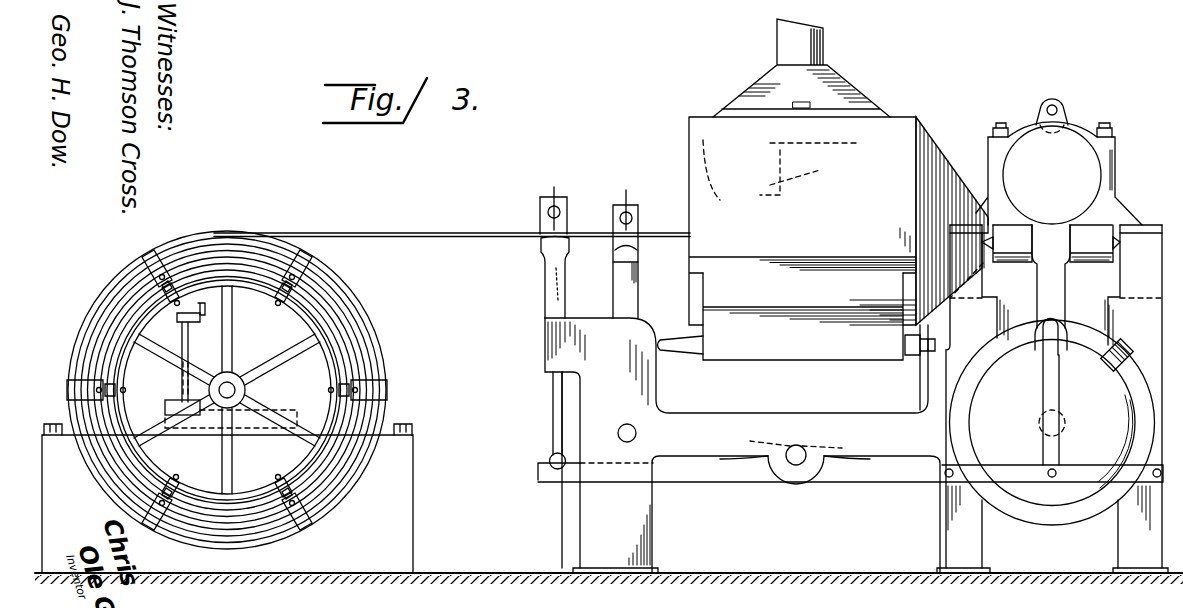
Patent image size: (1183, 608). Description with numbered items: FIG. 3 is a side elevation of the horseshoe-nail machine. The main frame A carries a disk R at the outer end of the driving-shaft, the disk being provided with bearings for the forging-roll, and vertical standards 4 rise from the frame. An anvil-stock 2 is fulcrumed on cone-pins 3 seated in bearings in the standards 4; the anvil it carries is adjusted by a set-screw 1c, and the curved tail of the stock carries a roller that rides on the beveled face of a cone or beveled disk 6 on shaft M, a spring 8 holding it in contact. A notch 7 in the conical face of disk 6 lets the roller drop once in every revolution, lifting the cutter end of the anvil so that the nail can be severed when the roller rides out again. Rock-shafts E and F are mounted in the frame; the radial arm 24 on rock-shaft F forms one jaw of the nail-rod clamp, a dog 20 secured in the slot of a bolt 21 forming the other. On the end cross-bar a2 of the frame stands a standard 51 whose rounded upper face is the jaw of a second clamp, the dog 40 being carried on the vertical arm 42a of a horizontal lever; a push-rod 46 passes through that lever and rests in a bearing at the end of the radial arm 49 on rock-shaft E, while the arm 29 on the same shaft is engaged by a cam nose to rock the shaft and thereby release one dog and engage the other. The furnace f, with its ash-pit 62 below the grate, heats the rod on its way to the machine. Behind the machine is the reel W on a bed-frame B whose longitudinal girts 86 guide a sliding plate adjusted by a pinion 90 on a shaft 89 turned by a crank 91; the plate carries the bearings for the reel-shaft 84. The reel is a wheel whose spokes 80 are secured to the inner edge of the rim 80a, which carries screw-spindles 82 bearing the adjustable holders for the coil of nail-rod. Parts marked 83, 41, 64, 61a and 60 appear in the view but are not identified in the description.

The retaining block 83 is at (327, 528).
The screw-spindles 82 is at (292, 294).
The rim or tire 80a is at (142, 348).
The spokes or radial arms 80 is at (238, 352).
The shaft 89 is at (180, 330).
The crank 91 is at (205, 322).
The reel-shaft 84 is at (248, 389).
The reel W is at (227, 390).
The pinion 90 is at (196, 432).
The longitudinal girts 86 is at (66, 424).
The bed-frame B is at (42, 438).
The vertical arm 42a is at (545, 198).
The dog 40 is at (556, 202).
The pivot 41 is at (548, 212).
The dog 20 is at (629, 244).
The bolt 21 is at (634, 218).
The standard 51 is at (546, 277).
The radial arm 24 is at (636, 280).
The end cross-bar a2 is at (546, 338).
The push-rod 46 is at (552, 408).
The lever or radial arm 49 is at (540, 470).
The rock-shaft F is at (636, 434).
The rock-shaft E is at (796, 445).
The main frame A is at (658, 500).
The arm 29 is at (870, 480).
The hopper 64 is at (801, 68).
The chute 61a is at (689, 152).
The furnace f is at (781, 170).
The casing 60 is at (802, 221).
The ash-pit 62 is at (819, 316).
The standards 4 is at (1054, 396).
The notch or recess 7 is at (1060, 104).
The disk R is at (1059, 173).
The set-screw 1c is at (1053, 243).
The anvil-stock 2 is at (1051, 345).
The cone-pins 3 is at (1120, 243).
The spring 8 is at (1050, 389).
The shaft M is at (1040, 423).
The cone or beveled disk 6 is at (1052, 422).